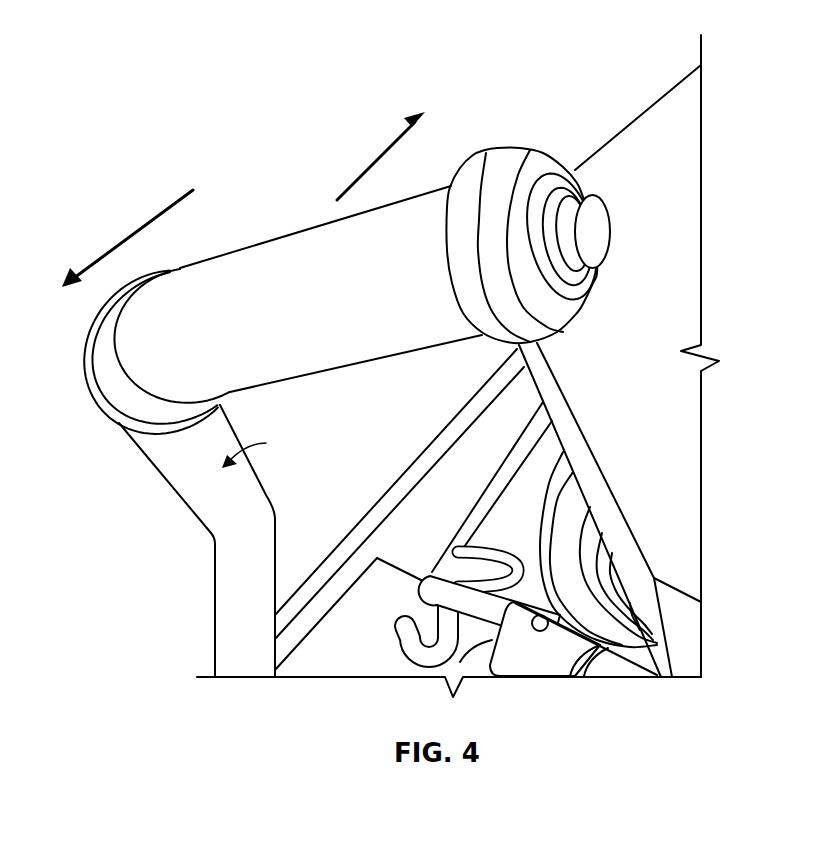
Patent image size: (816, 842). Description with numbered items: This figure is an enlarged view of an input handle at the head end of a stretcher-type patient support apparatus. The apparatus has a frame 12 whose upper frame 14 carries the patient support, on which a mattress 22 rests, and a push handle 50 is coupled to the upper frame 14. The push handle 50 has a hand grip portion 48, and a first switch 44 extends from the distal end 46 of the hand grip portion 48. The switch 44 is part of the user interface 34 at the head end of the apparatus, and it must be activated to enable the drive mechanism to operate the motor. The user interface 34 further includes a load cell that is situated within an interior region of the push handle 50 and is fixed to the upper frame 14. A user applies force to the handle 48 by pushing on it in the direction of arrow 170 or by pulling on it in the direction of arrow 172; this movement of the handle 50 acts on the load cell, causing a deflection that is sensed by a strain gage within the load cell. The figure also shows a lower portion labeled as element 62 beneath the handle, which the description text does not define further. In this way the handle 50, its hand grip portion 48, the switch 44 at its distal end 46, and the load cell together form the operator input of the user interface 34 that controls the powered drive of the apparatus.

The frame 12 is at (396, 453).
The upper frame 14 is at (480, 456).
The mattress 22 is at (627, 140).
The user interface 34 is at (604, 320).
The first switches 44 is at (602, 235).
The distal ends 46 is at (498, 170).
The hand grip portions 48 is at (312, 245).
The push handles 50 is at (259, 450).
The leg 62 is at (207, 507).
The arrow 170 is at (370, 163).
The arrow 172 is at (122, 238).